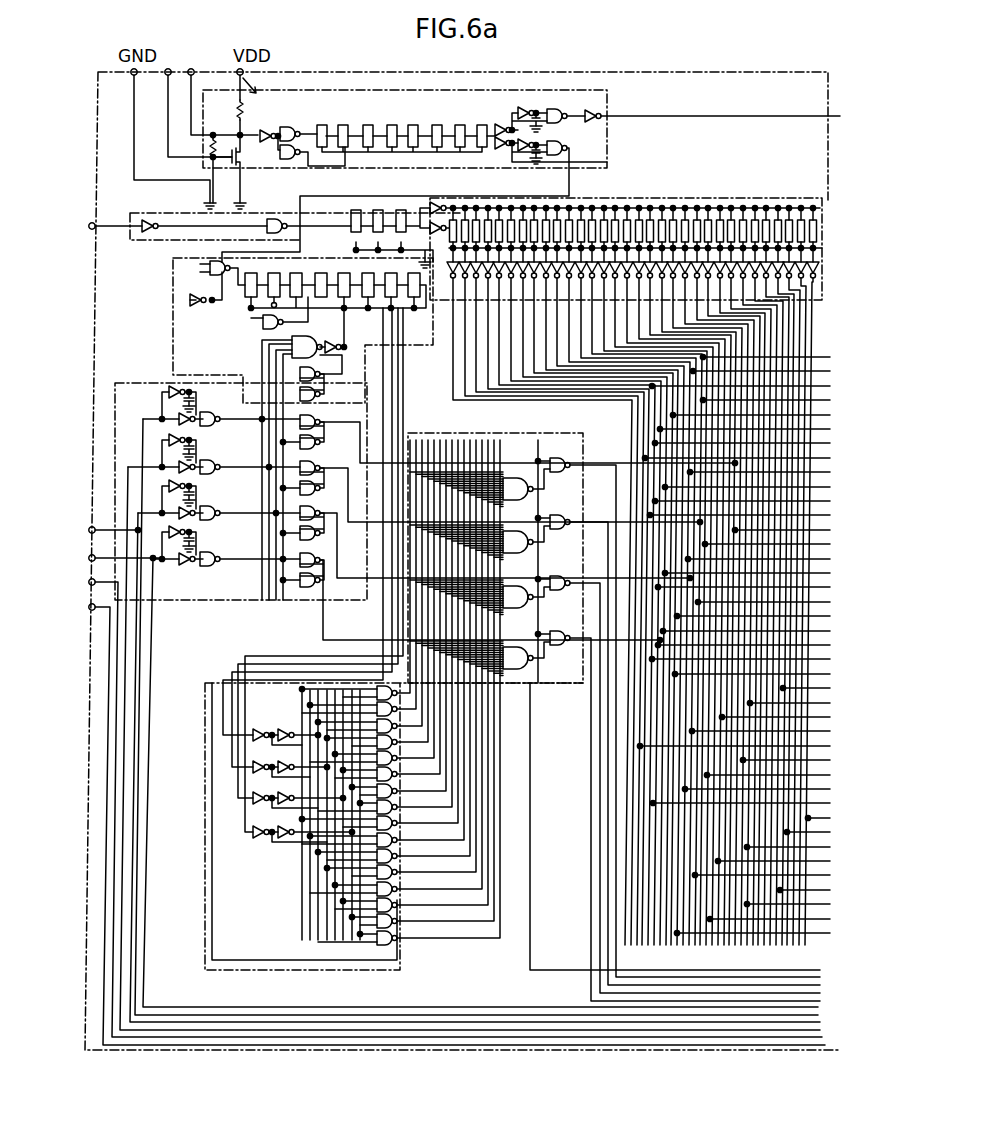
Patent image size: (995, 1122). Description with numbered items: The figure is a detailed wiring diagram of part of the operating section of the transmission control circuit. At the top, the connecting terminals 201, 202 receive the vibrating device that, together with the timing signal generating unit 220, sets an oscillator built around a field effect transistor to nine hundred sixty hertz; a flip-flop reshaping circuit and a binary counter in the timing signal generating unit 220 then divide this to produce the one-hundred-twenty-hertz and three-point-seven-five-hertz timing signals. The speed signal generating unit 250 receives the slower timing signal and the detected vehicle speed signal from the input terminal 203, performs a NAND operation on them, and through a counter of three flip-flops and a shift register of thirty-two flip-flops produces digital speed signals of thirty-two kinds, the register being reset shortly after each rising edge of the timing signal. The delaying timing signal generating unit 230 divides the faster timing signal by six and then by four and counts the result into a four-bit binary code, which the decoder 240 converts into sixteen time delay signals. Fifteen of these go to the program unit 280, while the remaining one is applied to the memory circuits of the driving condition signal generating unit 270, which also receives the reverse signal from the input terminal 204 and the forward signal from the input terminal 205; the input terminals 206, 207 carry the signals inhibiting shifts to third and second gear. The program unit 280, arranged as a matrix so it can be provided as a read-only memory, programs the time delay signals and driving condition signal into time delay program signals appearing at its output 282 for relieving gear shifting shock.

The connecting terminal 201 is at (168, 69).
The connecting terminal 202 is at (191, 69).
The input terminal 203 is at (92, 221).
The input terminal 204 is at (90, 531).
The input terminal 205 is at (90, 558).
The input terminal 206 is at (90, 583).
The input terminal 207 is at (90, 608).
The timing signal generating unit 220 is at (628, 104).
The delaying timing signal generating unit 230 is at (173, 303).
The decoder 240 is at (394, 826).
The speed signal generating unit 250 is at (724, 198).
The driving condition signal generating unit 270 is at (148, 383).
The program unit 280 is at (530, 683).
The program unit output 282 is at (618, 471).